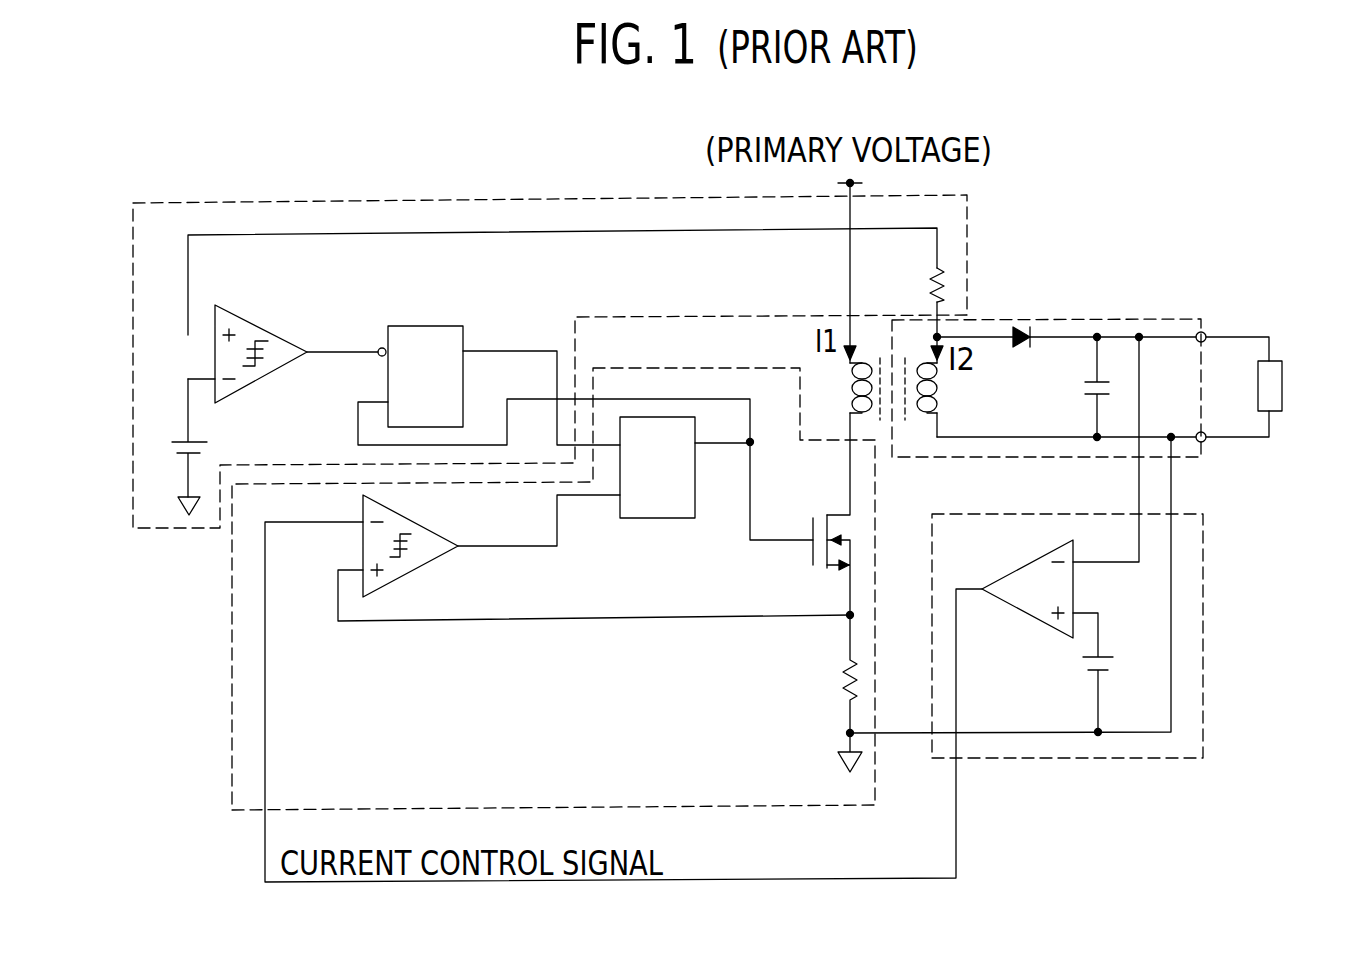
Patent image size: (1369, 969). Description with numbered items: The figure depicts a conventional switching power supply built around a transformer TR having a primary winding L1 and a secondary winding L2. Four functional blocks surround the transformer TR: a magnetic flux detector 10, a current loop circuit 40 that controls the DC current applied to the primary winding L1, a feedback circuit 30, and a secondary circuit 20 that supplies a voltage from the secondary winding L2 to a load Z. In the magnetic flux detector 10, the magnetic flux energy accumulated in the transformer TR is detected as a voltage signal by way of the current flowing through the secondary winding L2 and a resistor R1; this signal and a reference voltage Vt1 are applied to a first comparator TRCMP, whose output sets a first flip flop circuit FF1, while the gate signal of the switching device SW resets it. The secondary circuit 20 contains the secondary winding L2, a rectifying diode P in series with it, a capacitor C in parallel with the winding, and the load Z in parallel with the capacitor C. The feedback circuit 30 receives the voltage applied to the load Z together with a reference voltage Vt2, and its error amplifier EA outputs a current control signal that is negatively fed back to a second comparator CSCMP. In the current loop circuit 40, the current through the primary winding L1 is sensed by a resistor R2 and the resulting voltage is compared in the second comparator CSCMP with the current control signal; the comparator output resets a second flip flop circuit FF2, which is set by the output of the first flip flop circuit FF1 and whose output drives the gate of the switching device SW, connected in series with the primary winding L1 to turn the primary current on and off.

The magnetic flux detector 10 is at (602, 196).
The secondary circuit 20 is at (1000, 318).
The feedback circuit 30 is at (993, 762).
The current loop circuit 40 is at (710, 810).
The transformer TR is at (914, 399).
The primary winding L1 is at (843, 388).
The secondary winding L2 is at (983, 420).
The resistor R1 is at (919, 284).
The resistor R2 is at (831, 674).
The first comparator TRCMP is at (252, 318).
The second comparator CSCMP is at (432, 560).
The first flip flop circuit FF1 is at (429, 325).
The second flip flop circuit FF2 is at (660, 520).
The switching device SW is at (800, 528).
The reference voltage Vt1 is at (215, 447).
The reference voltage Vt2 is at (1119, 672).
The diode P is at (1021, 356).
The capacitor C is at (1085, 387).
The load Z is at (1280, 387).
The error amplifier EA is at (1022, 614).